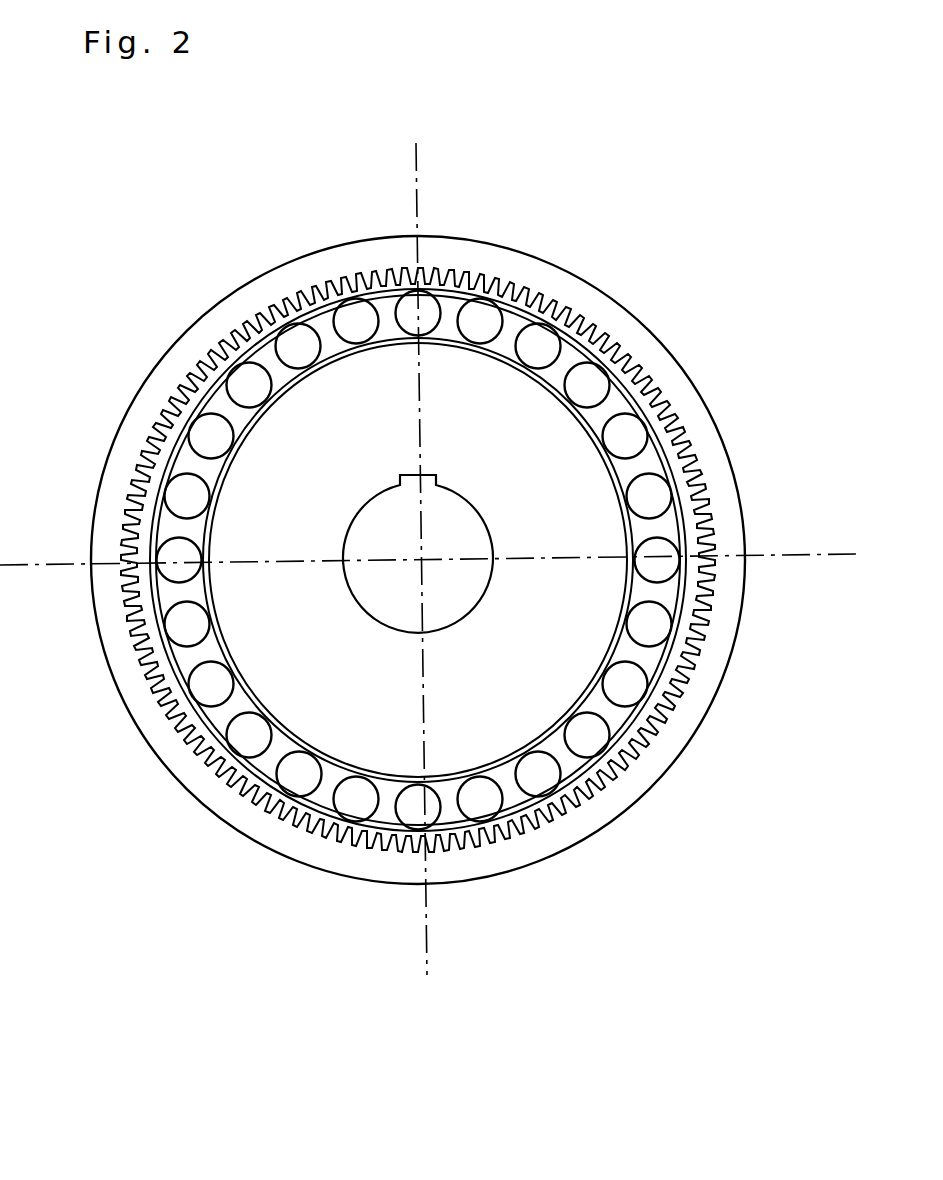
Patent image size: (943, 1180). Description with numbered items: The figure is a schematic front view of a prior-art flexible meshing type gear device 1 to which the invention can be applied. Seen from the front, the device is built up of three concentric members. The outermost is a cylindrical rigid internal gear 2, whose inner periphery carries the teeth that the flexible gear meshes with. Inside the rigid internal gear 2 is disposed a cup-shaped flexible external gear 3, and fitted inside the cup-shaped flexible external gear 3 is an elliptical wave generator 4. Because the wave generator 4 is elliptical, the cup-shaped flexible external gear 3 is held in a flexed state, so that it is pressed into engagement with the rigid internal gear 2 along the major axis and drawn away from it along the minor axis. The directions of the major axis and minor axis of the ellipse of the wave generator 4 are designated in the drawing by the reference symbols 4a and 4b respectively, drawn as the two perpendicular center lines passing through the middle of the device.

The flexible meshing type gear device 1 is at (545, 229).
The rigid internal gear 2 is at (605, 307).
The flexible external gear 3 is at (650, 383).
The wave generator 4 is at (532, 476).
The major axis direction 4a is at (413, 138).
The minor axis direction 4b is at (822, 553).